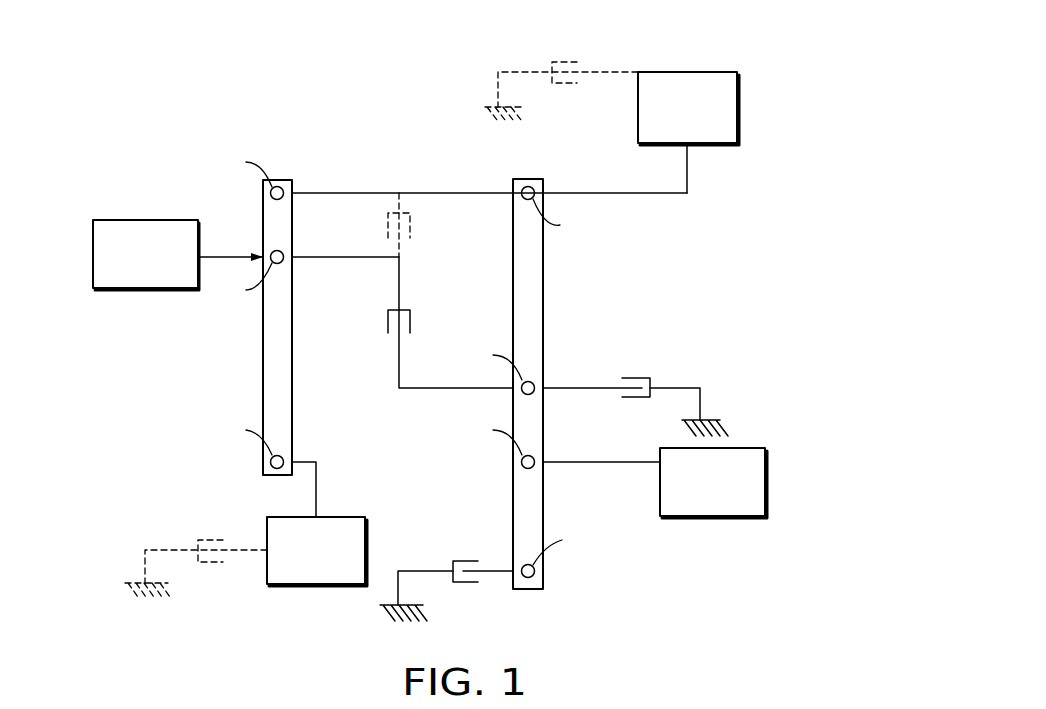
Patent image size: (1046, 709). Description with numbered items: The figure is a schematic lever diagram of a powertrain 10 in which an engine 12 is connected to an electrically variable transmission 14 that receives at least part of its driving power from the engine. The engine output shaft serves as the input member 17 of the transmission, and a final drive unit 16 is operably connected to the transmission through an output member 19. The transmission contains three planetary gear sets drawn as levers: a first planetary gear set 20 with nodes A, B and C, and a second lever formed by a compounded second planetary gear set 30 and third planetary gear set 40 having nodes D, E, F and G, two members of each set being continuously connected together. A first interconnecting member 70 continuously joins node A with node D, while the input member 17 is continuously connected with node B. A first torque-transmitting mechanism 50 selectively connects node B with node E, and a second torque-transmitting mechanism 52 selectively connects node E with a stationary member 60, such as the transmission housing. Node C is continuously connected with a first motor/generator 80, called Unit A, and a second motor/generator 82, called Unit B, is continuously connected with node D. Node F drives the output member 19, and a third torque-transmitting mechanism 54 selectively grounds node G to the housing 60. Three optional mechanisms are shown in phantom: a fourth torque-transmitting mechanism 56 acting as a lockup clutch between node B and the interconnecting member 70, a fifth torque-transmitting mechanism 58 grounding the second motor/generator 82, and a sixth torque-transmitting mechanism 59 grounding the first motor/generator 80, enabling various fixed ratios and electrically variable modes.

The powertrain 10 is at (216, 94).
The engine 12 is at (146, 206).
The electrically variable transmission 14 is at (341, 94).
The final drive unit 16 is at (715, 529).
The input member 17 is at (235, 255).
The output member 19 is at (612, 463).
The first planetary gear set 20 is at (283, 180).
The second planetary gear set 30 is at (547, 362).
The third planetary gear set 40 is at (527, 179).
The first torque-transmitting mechanism 50 is at (385, 329).
The second torque-transmitting mechanism 52 is at (639, 361).
The third torque-transmitting mechanism 54 is at (457, 545).
The fourth torque-transmitting mechanism 56 is at (416, 230).
The fifth torque-transmitting mechanism 58 is at (569, 47).
The sixth torque-transmitting mechanism 59 is at (203, 526).
The stationary member 60 is at (717, 419).
The first interconnecting member 70 is at (357, 193).
The first motor/generator 80 is at (308, 585).
The second motor/generator 82 is at (719, 144).